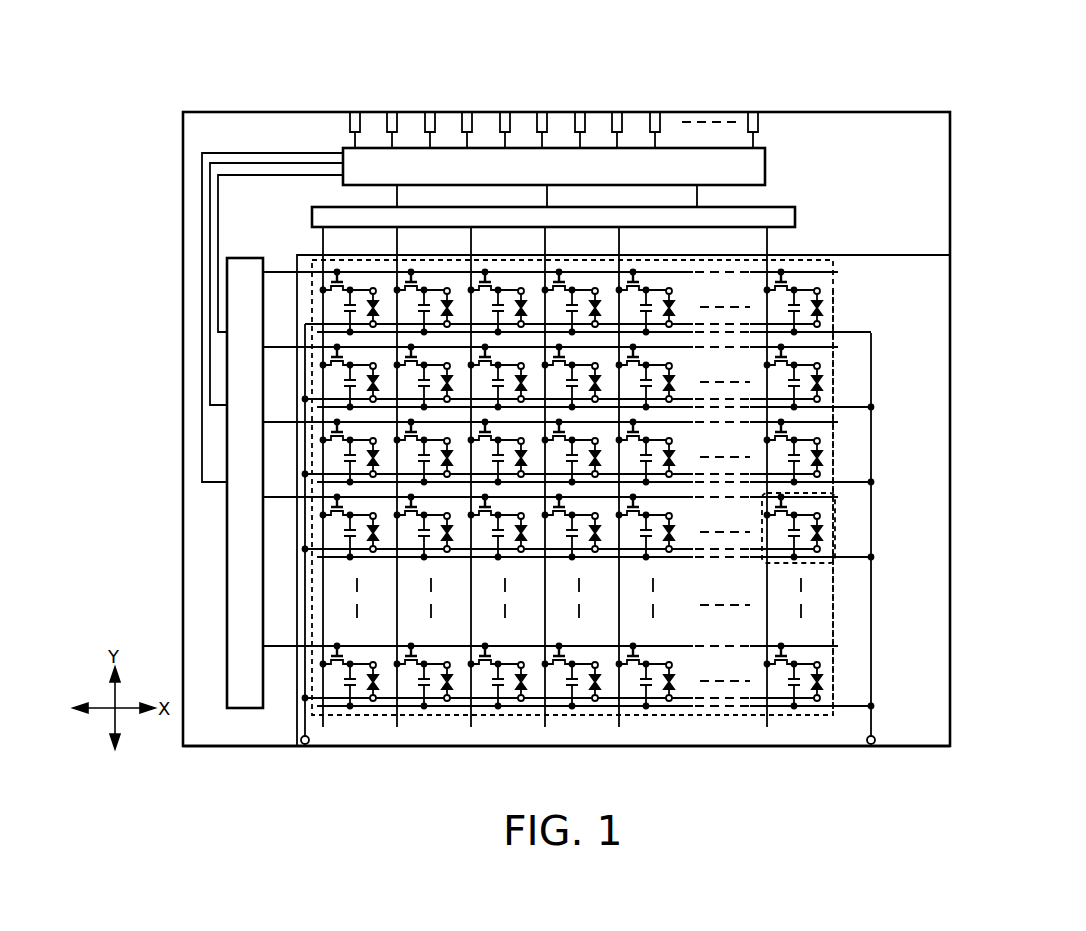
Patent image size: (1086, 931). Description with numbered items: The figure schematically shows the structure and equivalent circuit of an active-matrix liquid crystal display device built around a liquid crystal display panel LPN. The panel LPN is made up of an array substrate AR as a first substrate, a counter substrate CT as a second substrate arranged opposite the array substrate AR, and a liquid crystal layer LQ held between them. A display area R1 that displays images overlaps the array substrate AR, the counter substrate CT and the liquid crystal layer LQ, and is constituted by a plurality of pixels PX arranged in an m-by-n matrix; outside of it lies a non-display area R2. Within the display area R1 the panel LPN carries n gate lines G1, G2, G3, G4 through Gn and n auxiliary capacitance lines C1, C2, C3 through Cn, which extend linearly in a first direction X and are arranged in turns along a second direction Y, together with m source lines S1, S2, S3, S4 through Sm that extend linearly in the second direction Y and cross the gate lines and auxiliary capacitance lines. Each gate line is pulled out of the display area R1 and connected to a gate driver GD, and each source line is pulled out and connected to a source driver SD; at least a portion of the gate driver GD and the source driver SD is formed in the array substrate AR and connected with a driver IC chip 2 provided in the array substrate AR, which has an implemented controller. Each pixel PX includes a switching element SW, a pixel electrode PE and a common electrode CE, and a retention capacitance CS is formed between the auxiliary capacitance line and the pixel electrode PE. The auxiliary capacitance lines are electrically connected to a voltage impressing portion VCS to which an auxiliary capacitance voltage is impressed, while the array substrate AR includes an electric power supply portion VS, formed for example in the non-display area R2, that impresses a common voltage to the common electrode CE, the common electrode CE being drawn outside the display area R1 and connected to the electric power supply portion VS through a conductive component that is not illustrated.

The driver IC chip 2 is at (765, 148).
The liquid crystal display panel LPN is at (974, 127).
The array substrate AR is at (243, 736).
The source driver SD is at (797, 213).
The gate driver GD is at (226, 585).
The electric power supply portion VS is at (308, 744).
The voltage impressing portion VCS is at (875, 737).
The counter substrate CT is at (922, 255).
The display area R1 is at (833, 362).
The non-display area R2 is at (927, 415).
The source line S1 is at (328, 243).
The source line S2 is at (402, 243).
The source line S3 is at (476, 243).
The source line S4 is at (550, 243).
The source line Sm is at (772, 243).
The gate line G1 is at (282, 272).
The gate line G2 is at (282, 347).
The gate line G3 is at (282, 422).
The gate line G4 is at (282, 497).
The gate line Gn is at (282, 646).
The auxiliary capacitance line C1 is at (855, 332).
The auxiliary capacitance line C2 is at (855, 407).
The auxiliary capacitance line C3 is at (855, 482).
The auxiliary capacitance line Cn is at (855, 706).
The common electrode CE is at (821, 549).
The pixel PX is at (835, 563).
The switching element SW is at (766, 509).
The retention capacitance CS is at (786, 535).
The pixel electrode PE is at (820, 516).
The liquid crystal layer LQ is at (823, 532).